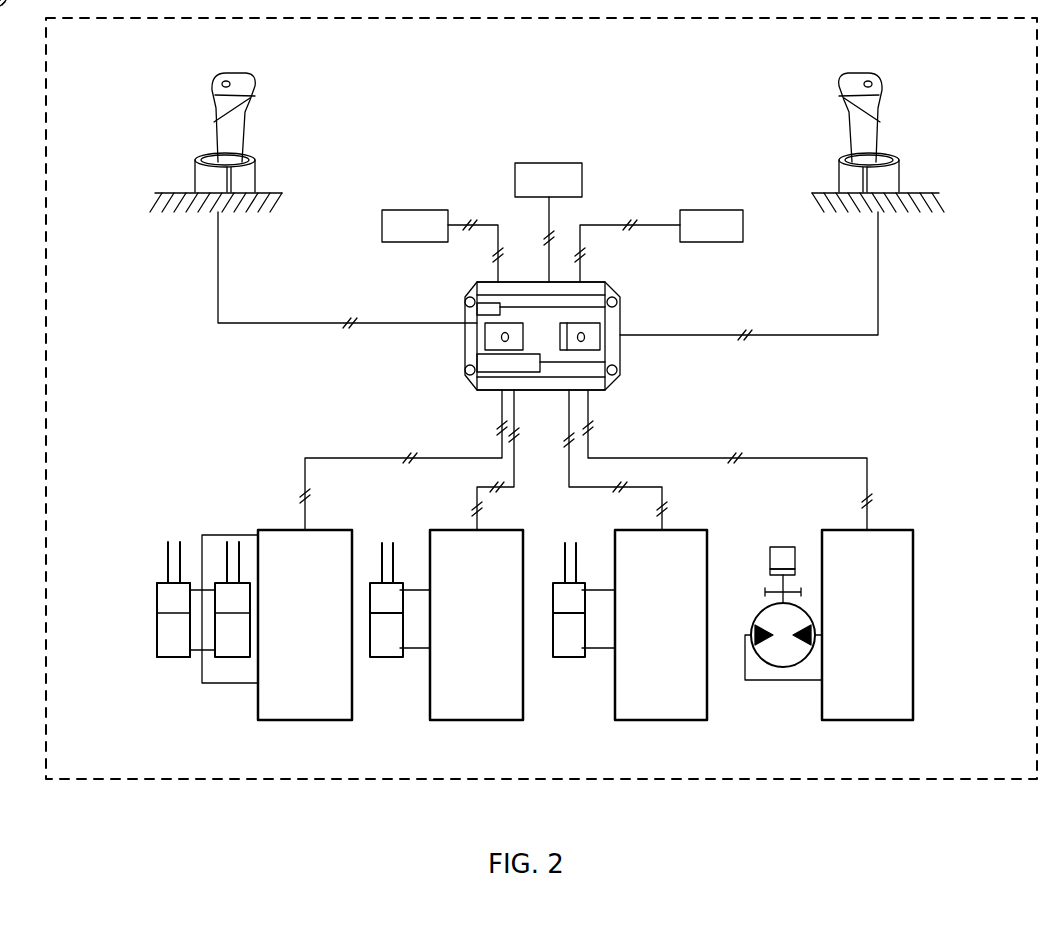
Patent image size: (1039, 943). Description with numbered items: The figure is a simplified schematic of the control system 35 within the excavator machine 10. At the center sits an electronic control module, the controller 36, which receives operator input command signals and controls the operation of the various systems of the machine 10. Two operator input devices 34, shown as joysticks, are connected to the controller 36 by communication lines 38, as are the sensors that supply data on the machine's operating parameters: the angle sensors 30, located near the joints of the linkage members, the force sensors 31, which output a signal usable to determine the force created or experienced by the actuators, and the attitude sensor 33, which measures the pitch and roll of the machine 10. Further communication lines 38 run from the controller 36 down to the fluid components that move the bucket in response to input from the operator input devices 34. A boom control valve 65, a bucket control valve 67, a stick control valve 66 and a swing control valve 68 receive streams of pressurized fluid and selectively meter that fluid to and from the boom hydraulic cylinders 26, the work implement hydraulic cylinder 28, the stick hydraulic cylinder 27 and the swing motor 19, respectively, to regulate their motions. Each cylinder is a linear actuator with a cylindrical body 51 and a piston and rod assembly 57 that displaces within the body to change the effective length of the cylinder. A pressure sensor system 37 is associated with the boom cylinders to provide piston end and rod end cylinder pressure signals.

The machine 10 is at (800, 781).
The swing motor 19 is at (780, 657).
The boom hydraulic cylinders 26 is at (159, 619).
The stick hydraulic cylinder 27 is at (385, 657).
The work implement hydraulic cylinder 28 is at (565, 657).
The angle sensors 30 is at (420, 220).
The force sensors 31 is at (548, 180).
The attitude sensor 33 is at (705, 215).
The operator input devices 34 is at (222, 128).
The control system 35 is at (888, 394).
The controller 36 is at (607, 343).
The pressure sensor system 37 is at (225, 389).
The communication lines 38 is at (655, 218).
The cylindrical body 51 is at (157, 620).
The piston and rod assembly 57 is at (168, 555).
The boom control valve 65 is at (288, 703).
The stick control valve 66 is at (655, 702).
The bucket control valve 67 is at (477, 702).
The swing control valve 68 is at (877, 710).